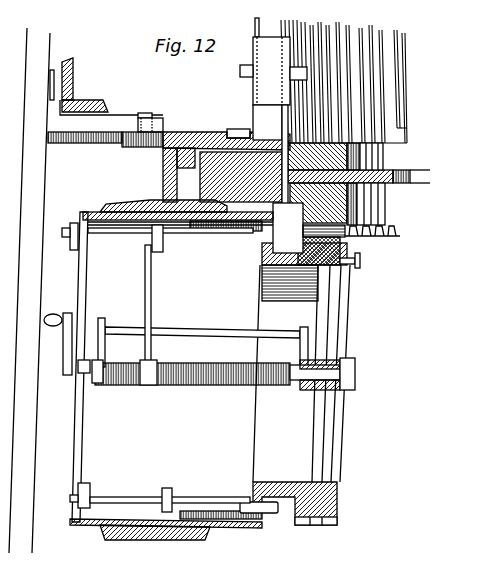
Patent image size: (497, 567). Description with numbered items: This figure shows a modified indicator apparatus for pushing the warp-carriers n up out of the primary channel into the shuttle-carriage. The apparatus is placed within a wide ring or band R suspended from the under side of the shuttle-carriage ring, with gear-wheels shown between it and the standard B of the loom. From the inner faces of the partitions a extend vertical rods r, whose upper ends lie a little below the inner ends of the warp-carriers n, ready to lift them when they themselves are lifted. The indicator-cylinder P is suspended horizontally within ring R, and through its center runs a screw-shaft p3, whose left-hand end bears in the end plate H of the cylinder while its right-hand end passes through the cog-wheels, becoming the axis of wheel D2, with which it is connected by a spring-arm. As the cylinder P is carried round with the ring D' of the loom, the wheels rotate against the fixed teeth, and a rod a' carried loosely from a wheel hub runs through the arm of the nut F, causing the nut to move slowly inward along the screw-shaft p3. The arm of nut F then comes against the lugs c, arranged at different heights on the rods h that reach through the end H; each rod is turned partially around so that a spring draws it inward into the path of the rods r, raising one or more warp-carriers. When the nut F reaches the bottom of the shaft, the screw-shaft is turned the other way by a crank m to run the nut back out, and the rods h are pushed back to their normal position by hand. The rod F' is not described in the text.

The standard B is at (29, 290).
The crank m is at (58, 337).
The end plate of the cylinder H is at (85, 367).
The rods h is at (157, 357).
The lugs of rods h c is at (163, 368).
The rod F' is at (154, 307).
The rod a' is at (203, 340).
The screw-shaft p3 is at (192, 365).
The indicator-cylinder P is at (212, 449).
The ring D' is at (169, 163).
The cog-wheel D2 is at (312, 235).
The warp-carriers n is at (273, 61).
The partitions a is at (234, 316).
The nut F is at (359, 189).
The ring or band R is at (178, 208).
The vertical rods r is at (298, 395).